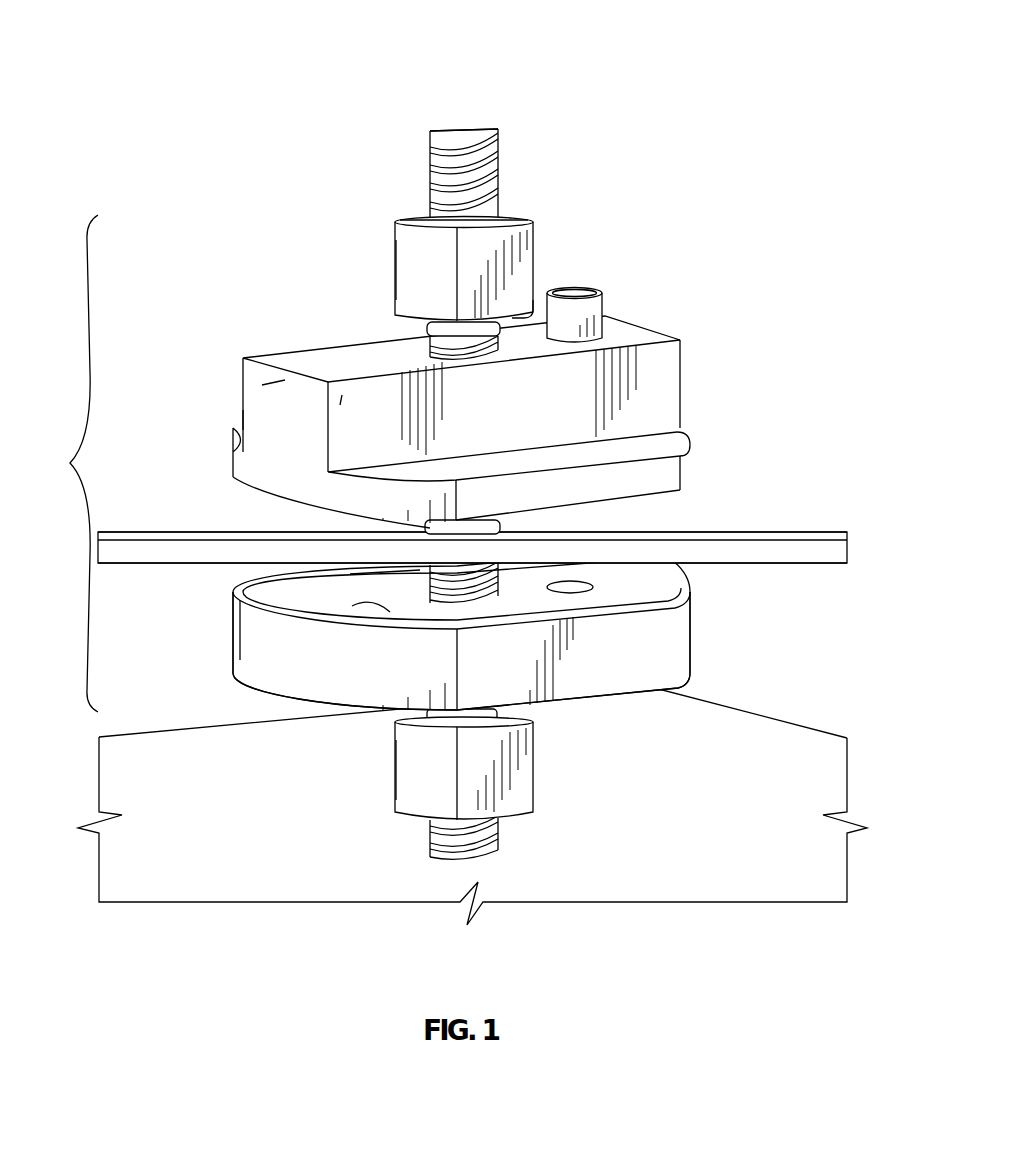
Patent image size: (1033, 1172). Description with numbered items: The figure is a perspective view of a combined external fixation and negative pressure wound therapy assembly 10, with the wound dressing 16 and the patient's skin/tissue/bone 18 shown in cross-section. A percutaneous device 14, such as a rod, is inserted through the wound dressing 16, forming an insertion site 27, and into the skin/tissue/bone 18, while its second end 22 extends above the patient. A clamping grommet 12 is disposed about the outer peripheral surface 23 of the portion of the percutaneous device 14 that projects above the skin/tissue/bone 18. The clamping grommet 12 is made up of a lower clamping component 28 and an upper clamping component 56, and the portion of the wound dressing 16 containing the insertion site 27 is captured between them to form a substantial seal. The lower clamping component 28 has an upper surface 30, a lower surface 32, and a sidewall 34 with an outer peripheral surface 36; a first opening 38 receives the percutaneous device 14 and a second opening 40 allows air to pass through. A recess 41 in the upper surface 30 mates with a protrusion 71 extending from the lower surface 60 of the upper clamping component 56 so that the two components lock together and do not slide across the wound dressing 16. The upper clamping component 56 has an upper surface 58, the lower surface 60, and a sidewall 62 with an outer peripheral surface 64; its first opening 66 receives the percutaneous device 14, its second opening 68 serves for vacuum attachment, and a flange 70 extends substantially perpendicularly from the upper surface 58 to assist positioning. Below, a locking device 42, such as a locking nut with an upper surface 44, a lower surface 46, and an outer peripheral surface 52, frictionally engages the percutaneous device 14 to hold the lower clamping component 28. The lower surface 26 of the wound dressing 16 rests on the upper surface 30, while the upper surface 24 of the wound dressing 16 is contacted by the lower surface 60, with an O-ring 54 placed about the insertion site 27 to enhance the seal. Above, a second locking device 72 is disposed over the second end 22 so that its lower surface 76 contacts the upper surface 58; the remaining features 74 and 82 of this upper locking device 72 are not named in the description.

The combined external fixation and negative pressure wound therapy assembly 10 is at (764, 73).
The clamping grommet 12 is at (65, 463).
The percutaneous device 14 is at (506, 163).
The wound dressing 16 is at (850, 546).
The skin/tissue/bone 18 is at (800, 810).
The second end 22 is at (470, 127).
The outer peripheral surface 23 is at (433, 164).
The upper surface 24 is at (798, 532).
The lower surface 26 is at (833, 565).
The insertion site 27 is at (495, 521).
The lower clamping component 28 is at (693, 641).
The upper surface 30 is at (663, 590).
The lower surface 32 is at (683, 683).
The sidewall 34 is at (232, 628).
The outer peripheral surface 36 is at (275, 652).
The first opening 38 is at (350, 574).
The second opening 40 is at (585, 583).
The recess 41 is at (352, 606).
The locking device 42 is at (539, 772).
The upper surface 44 is at (405, 717).
The lower surface 46 is at (507, 818).
The outer peripheral surface 52 is at (417, 782).
The O-ring 54 is at (425, 527).
The upper clamping component 56 is at (685, 358).
The upper surface 58 is at (648, 440).
The lower surface 60 is at (240, 478).
The sidewall 62 is at (236, 420).
The outer peripheral surface 64 is at (272, 392).
The first opening 66 is at (430, 338).
The second opening 68 is at (586, 292).
The flange 70 is at (340, 405).
The protrusion 71 is at (685, 488).
The locking device 72 is at (538, 236).
The top of nut 74 is at (510, 218).
The lower surface 76 is at (540, 300).
The outer surface of nut 82 is at (410, 283).